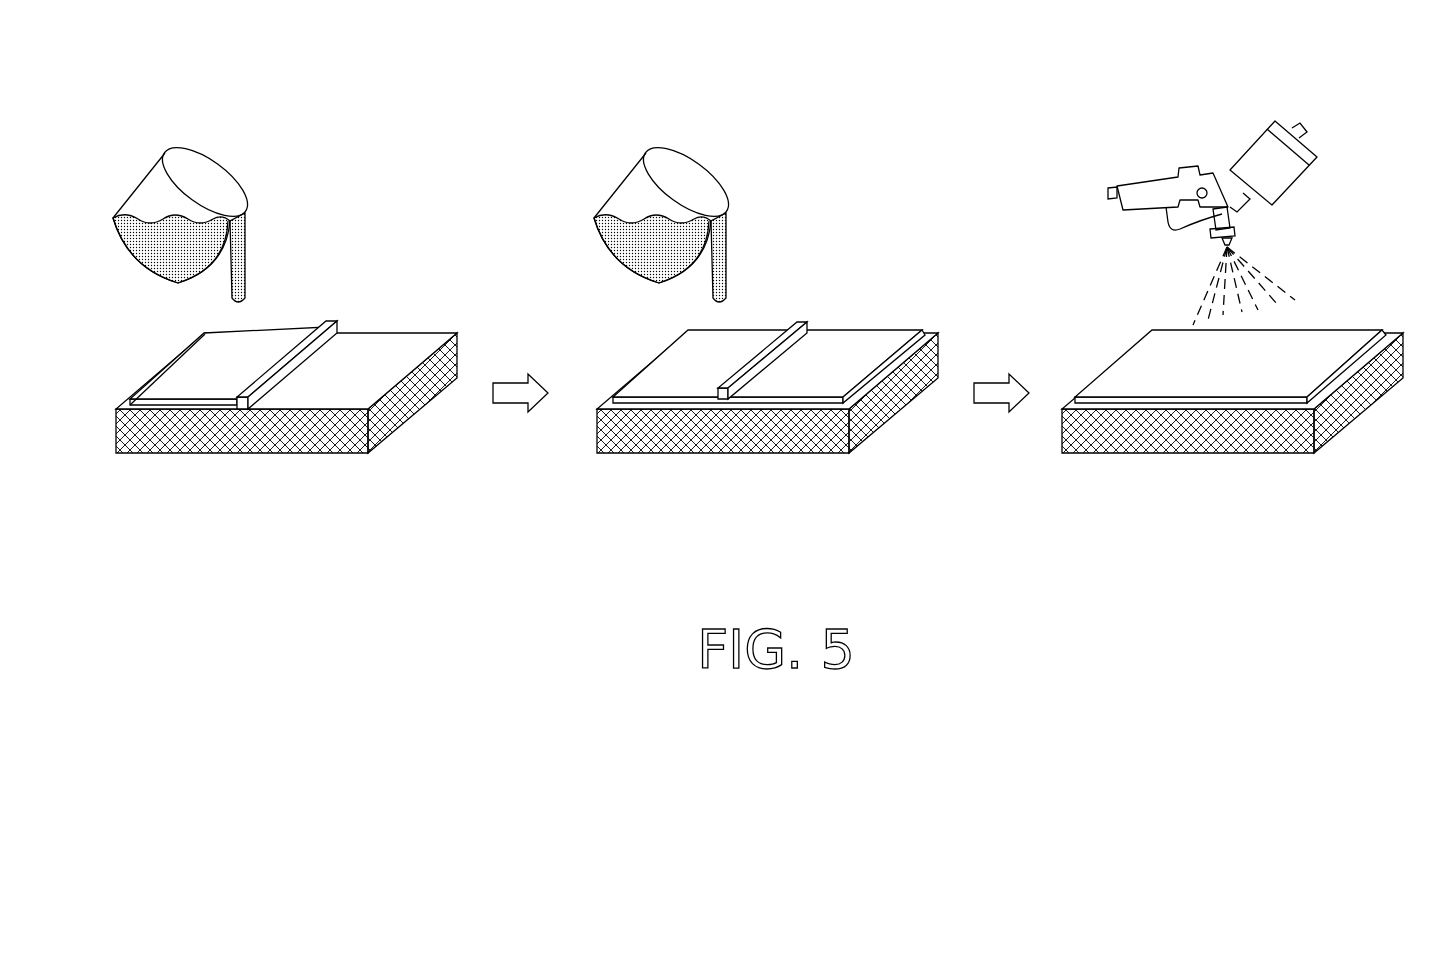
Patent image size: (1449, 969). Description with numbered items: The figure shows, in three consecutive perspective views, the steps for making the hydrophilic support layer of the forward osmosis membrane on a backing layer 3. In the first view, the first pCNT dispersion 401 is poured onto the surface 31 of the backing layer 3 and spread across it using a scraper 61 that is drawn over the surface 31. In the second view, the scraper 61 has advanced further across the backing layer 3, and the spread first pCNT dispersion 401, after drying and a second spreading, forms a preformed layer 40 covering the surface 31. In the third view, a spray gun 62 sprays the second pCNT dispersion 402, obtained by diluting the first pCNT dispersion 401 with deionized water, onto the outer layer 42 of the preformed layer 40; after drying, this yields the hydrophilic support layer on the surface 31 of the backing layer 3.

The backing layer 3 is at (287, 443).
The surface 31 is at (402, 345).
The preformed layer 40 is at (652, 377).
The outer layer 42 is at (1298, 340).
The scraper 61 is at (332, 320).
The spray gun 62 is at (1143, 183).
The first pCNT dispersion 401 is at (243, 258).
The second pCNT dispersion 402 is at (1203, 292).